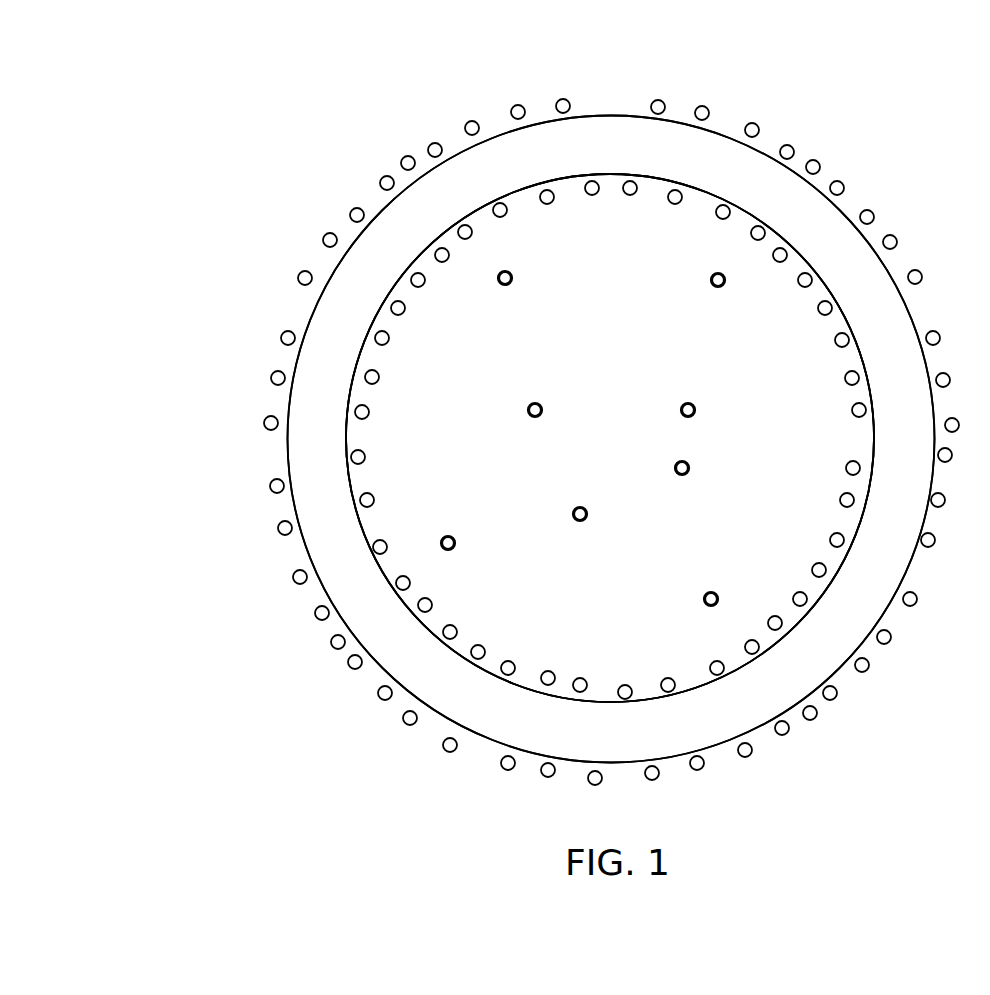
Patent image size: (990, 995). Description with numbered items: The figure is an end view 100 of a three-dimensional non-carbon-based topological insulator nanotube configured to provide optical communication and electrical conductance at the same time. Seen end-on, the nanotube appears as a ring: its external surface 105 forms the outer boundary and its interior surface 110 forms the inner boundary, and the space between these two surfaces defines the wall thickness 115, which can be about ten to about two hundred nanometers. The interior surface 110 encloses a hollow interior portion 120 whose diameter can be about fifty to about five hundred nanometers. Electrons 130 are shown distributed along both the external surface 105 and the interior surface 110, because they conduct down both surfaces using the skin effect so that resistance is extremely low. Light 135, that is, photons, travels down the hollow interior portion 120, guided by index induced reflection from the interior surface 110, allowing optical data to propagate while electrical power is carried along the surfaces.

The end view 100 is at (252, 132).
The external surface 105 is at (908, 569).
The interior surface 110 is at (873, 432).
The wall thickness 115 is at (866, 291).
The hollow interior portion 120 is at (814, 512).
The electrons 130 is at (507, 214).
The light 135 is at (540, 431).